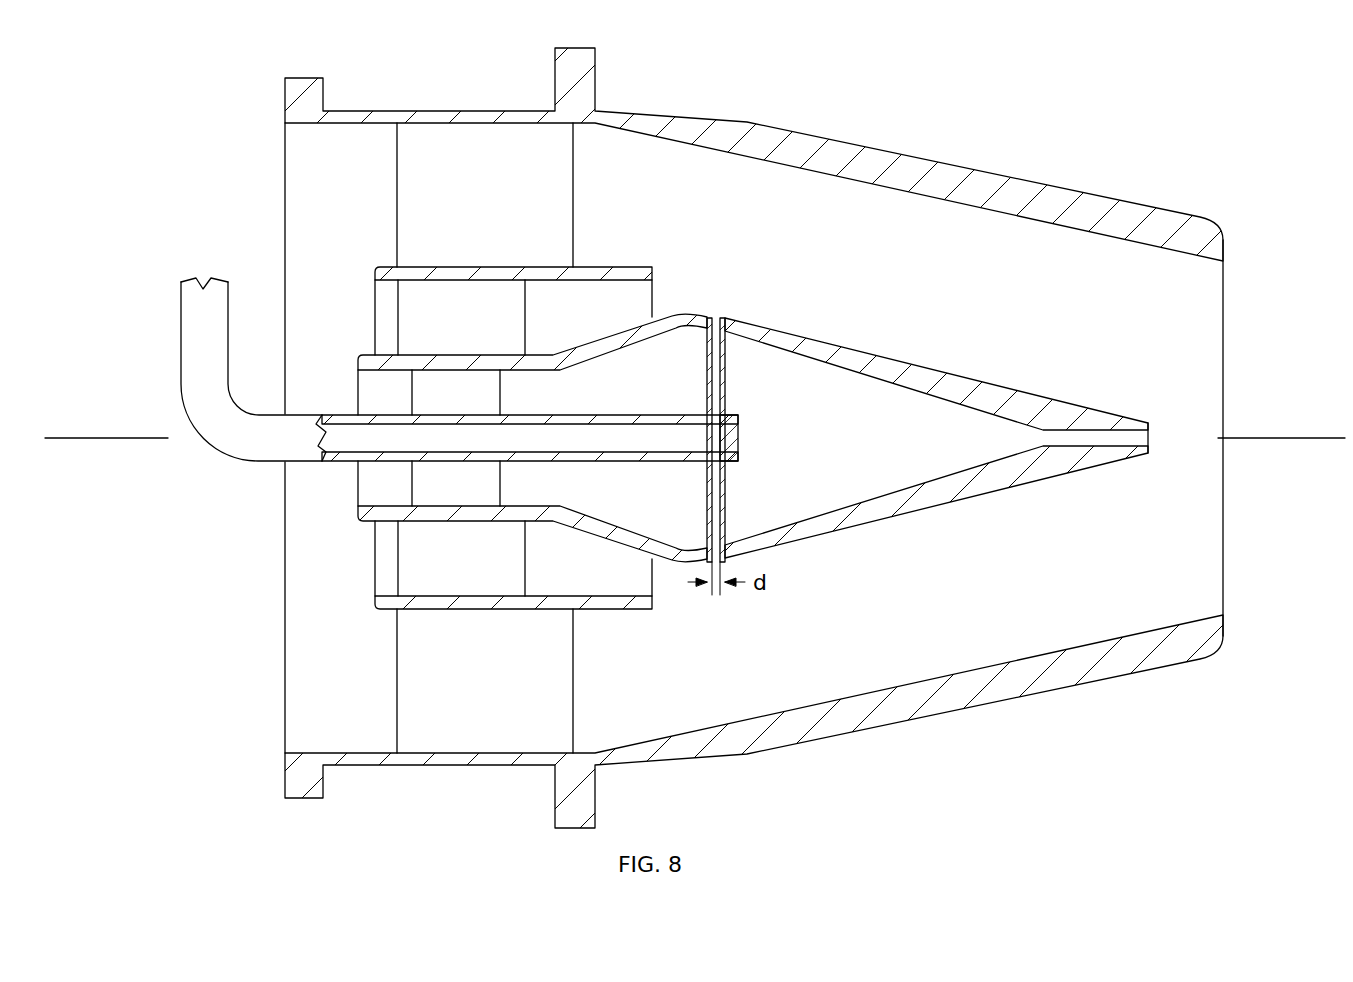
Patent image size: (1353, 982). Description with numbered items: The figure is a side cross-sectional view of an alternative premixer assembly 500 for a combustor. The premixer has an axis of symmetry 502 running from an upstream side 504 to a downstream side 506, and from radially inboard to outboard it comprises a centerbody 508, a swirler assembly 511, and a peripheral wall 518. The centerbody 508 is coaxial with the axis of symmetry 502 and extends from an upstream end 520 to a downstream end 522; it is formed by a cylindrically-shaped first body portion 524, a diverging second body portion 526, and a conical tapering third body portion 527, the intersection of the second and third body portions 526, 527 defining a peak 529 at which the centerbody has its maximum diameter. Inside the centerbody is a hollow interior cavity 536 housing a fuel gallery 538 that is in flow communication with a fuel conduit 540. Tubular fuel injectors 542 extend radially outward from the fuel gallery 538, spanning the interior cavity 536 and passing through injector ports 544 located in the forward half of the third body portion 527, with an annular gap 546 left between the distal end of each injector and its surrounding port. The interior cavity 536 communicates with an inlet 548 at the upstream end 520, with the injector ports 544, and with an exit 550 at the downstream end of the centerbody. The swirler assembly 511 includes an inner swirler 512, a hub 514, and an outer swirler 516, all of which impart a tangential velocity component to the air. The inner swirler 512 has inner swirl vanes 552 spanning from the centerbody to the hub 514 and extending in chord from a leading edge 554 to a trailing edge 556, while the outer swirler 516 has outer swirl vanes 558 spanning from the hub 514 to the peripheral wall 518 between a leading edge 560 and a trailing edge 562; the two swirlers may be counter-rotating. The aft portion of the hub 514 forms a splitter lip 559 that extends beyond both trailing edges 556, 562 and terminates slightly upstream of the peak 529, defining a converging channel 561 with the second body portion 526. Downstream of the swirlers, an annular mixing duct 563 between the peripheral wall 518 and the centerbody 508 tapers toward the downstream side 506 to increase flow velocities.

The premixer assembly 500 is at (1140, 115).
The axis of symmetry 502 is at (1280, 425).
The upstream side 504 is at (235, 707).
The downstream side 506 is at (1256, 583).
The centerbody 508 is at (962, 318).
The swirler assembly 511 is at (353, 605).
The inner swirler 512 is at (412, 304).
The hub 514 is at (376, 268).
The outer swirler 516 is at (420, 212).
The peripheral wall 518 is at (885, 160).
The upstream end 520 is at (355, 510).
The downstream end 522 is at (1150, 452).
The first body portion 524 is at (372, 370).
The second body portion 526 is at (612, 344).
The third body portion 527 is at (975, 388).
The peak 529 is at (690, 316).
The interior cavity 536 is at (655, 501).
The fuel gallery 538 is at (740, 443).
The fuel conduit 540 is at (203, 292).
The fuel injectors 542 is at (728, 376).
The injector ports 544 is at (727, 330).
The annular gap 546 is at (725, 316).
The inlet 548 is at (357, 486).
The exit 550 is at (1150, 436).
The inner swirl vanes 552 is at (457, 560).
The leading edge 554 is at (396, 556).
The trailing edge 556 is at (527, 560).
The outer swirl vanes 558 is at (457, 668).
The splitter lip 559 is at (608, 272).
The leading edge 560 is at (396, 702).
The gap 561 is at (636, 298).
The trailing edge 562 is at (575, 688).
The mixing duct 563 is at (905, 237).